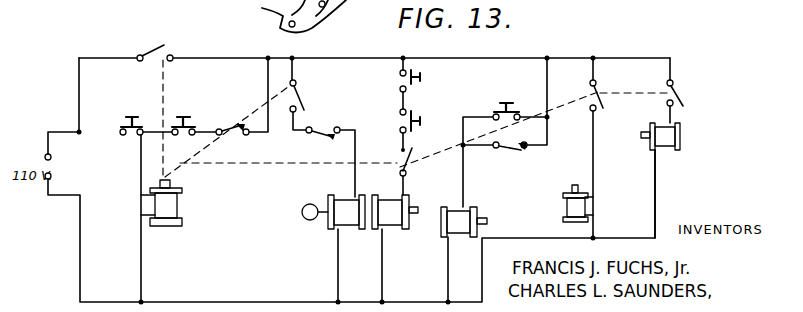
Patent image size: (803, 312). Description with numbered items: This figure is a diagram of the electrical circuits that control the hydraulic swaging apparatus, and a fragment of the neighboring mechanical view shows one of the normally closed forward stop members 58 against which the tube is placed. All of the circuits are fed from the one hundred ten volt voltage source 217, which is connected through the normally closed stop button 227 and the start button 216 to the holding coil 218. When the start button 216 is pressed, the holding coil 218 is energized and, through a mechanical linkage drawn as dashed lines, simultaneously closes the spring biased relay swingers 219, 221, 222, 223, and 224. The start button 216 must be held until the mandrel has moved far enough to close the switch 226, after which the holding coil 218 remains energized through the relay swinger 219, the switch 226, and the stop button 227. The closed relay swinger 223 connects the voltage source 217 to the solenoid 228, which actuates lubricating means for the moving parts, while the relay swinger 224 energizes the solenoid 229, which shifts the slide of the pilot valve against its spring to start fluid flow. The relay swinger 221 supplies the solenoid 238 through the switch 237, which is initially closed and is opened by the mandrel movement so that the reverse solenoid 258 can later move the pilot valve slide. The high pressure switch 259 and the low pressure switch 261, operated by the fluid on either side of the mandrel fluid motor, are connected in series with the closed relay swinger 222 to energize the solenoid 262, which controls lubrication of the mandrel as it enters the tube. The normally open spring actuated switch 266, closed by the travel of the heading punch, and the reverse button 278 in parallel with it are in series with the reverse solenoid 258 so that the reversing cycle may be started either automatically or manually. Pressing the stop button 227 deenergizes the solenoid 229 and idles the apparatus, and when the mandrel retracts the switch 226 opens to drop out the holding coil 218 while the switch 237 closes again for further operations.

The forward stop member 58 is at (289, 16).
The start button 216 is at (120, 118).
The voltage source 217 is at (46, 154).
The holding coil 218 is at (183, 205).
The relay swinger 219 is at (157, 47).
The relay swinger 221 is at (305, 103).
The relay swinger 222 is at (412, 158).
The relay swinger 223 is at (617, 86).
The relay swinger 224 is at (678, 94).
The switch 226 is at (228, 125).
The stop button 227 is at (193, 113).
The solenoid 228 is at (587, 206).
The solenoid 229 is at (663, 143).
The switch 237 is at (326, 115).
The solenoid 238 is at (334, 196).
The solenoid 258 is at (474, 212).
The high pressure switch 259 is at (418, 111).
The low pressure switch 261 is at (423, 76).
The solenoid 262 is at (395, 230).
The switch 266 is at (505, 150).
The reverse button 278 is at (500, 102).